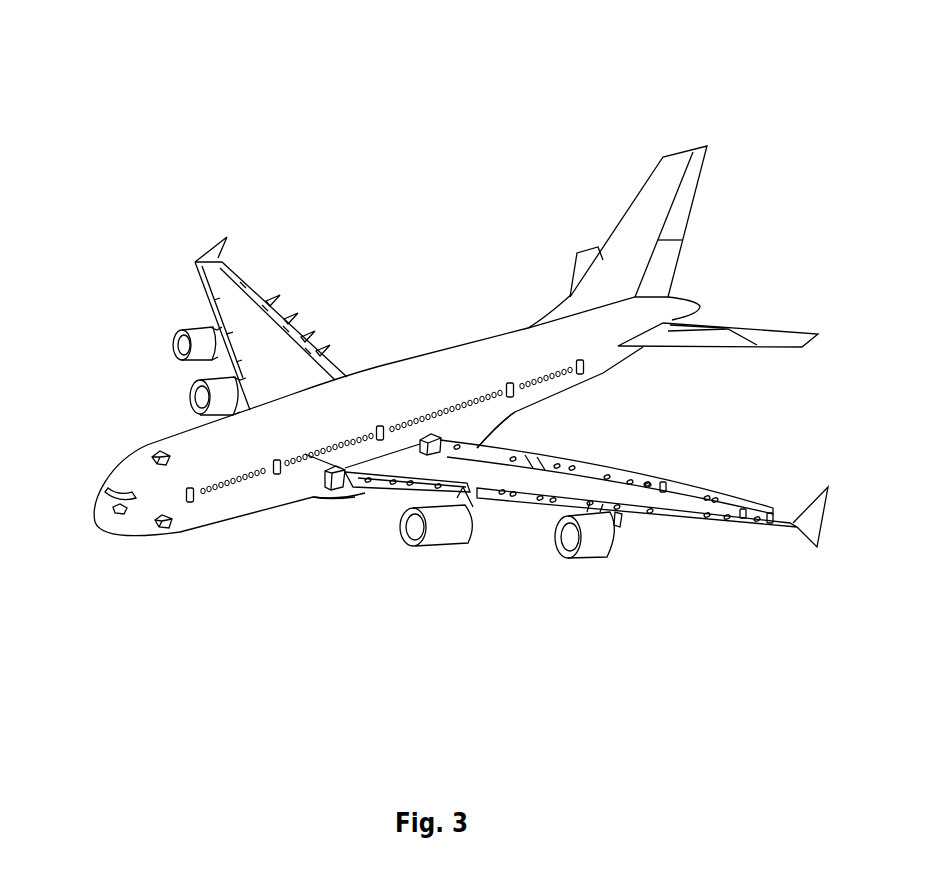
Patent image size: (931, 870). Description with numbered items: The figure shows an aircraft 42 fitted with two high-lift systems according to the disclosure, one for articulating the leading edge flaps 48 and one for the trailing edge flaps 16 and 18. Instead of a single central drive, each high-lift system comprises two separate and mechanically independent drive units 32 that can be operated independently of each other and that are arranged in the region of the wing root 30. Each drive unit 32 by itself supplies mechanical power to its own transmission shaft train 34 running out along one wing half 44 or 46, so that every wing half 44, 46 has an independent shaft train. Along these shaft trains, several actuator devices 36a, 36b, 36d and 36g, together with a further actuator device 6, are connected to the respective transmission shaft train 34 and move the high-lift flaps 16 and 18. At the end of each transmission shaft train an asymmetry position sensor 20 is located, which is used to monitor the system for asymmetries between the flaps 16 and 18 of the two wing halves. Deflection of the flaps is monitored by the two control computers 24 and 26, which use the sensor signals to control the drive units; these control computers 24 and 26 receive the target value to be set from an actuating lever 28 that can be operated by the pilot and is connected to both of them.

The aircraft 42 is at (429, 107).
The leading edge flaps 48 is at (197, 284).
The wing half 46 is at (152, 373).
The wing half 44 is at (535, 553).
The drive unit 32 is at (338, 467).
The wing root 30 is at (332, 497).
The control computer 24 is at (157, 458).
The control computer 26 is at (165, 528).
The actuating lever 28 is at (118, 515).
The actuator device 36a is at (458, 446).
The actuator device 36b is at (568, 456).
The actuator device 36d is at (422, 493).
The actuator device 36g is at (663, 482).
The high-lift flaps 18 is at (647, 481).
The high-lift flaps 16 is at (523, 448).
The transmission shaft train 34 is at (468, 500).
The asymmetry position sensor 20 is at (677, 481).
The actuator device 6 is at (617, 514).